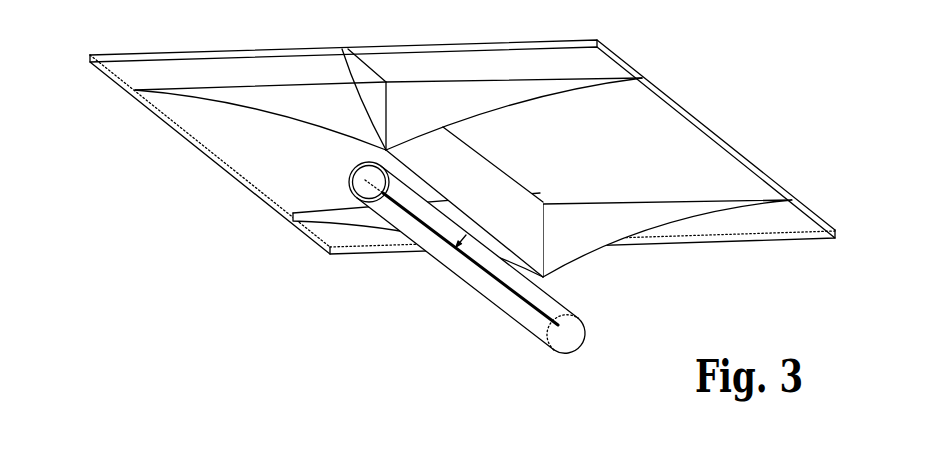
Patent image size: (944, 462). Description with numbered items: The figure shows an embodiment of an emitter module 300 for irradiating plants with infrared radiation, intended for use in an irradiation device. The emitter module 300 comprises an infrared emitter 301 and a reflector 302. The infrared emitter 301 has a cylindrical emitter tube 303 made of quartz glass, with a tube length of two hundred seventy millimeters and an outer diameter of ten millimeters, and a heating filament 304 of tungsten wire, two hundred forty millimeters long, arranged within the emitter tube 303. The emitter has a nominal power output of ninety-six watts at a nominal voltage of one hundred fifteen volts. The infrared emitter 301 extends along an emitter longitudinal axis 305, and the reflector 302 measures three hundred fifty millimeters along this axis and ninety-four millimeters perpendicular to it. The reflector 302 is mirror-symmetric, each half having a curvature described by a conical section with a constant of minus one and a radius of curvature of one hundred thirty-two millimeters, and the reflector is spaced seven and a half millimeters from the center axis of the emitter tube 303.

The emitter module 300 is at (462, 190).
The infrared emitter 301 is at (450, 271).
The reflector 302 is at (395, 48).
The emitter tube 303 is at (366, 202).
The heating filament 304 is at (472, 262).
The emitter longitudinal axis 305 is at (583, 326).